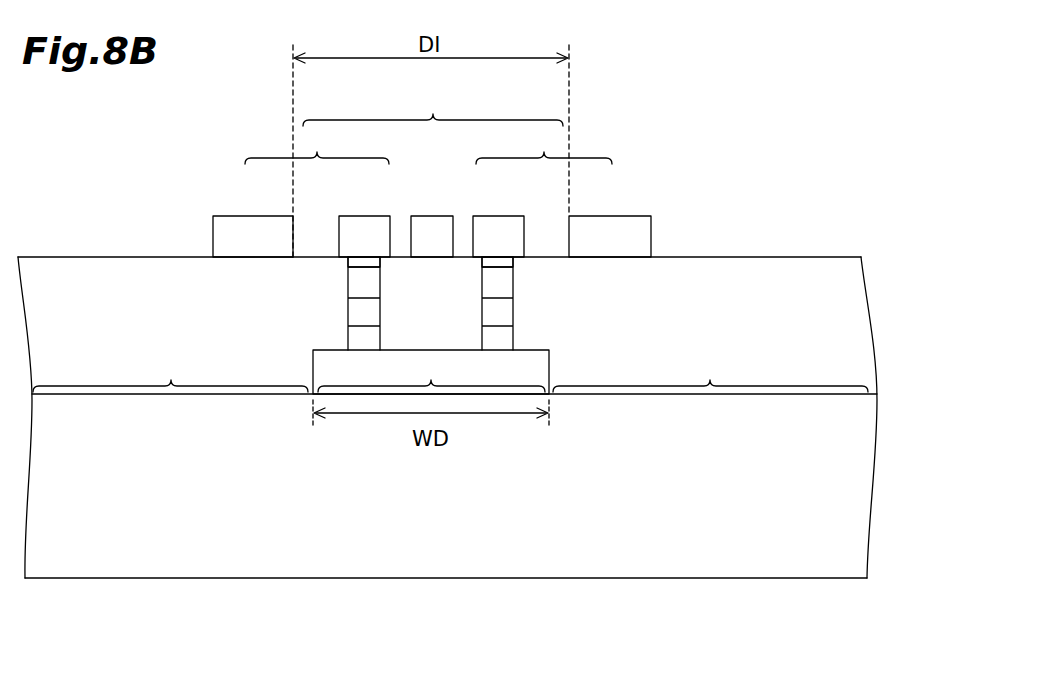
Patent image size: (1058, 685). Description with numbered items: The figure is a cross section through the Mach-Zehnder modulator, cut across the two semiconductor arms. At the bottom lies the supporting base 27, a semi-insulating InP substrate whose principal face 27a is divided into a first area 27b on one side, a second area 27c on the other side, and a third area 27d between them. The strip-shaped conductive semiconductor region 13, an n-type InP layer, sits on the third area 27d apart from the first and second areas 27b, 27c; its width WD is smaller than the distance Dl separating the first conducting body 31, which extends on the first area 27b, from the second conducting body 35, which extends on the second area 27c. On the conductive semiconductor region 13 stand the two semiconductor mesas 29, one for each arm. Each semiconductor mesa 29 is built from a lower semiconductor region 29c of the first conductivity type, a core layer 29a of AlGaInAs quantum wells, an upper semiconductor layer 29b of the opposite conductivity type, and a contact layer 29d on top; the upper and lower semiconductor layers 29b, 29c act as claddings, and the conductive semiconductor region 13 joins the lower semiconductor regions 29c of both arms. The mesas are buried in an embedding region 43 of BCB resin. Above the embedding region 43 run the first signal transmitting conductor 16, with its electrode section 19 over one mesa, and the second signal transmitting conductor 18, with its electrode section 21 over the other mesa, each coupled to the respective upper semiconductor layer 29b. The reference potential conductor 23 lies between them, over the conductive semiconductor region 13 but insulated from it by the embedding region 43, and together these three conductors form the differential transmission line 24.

The conductive semiconductor region 13 is at (551, 360).
The first signal transmitting conductor 16 is at (317, 146).
The second signal transmitting conductor 18 is at (544, 146).
The first electrode section 19 is at (371, 222).
The electrode section 21 is at (496, 222).
The reference potential conductor 23 is at (431, 222).
The differential transmission line 24 is at (433, 107).
The supporting base 27 is at (858, 489).
The principal face 27a is at (862, 394).
The first area 27b is at (170, 374).
The second area 27c is at (710, 374).
The third area 27d is at (431, 375).
The semiconductor mesa 29 is at (345, 262).
The core layer 29a is at (492, 310).
The upper semiconductor layer 29b is at (492, 280).
The lower semiconductor region 29c is at (492, 336).
The contact layer 29d is at (358, 262).
The first conducting body 31 is at (264, 222).
The second conducting body 35 is at (594, 222).
The embedding region 43 is at (817, 258).